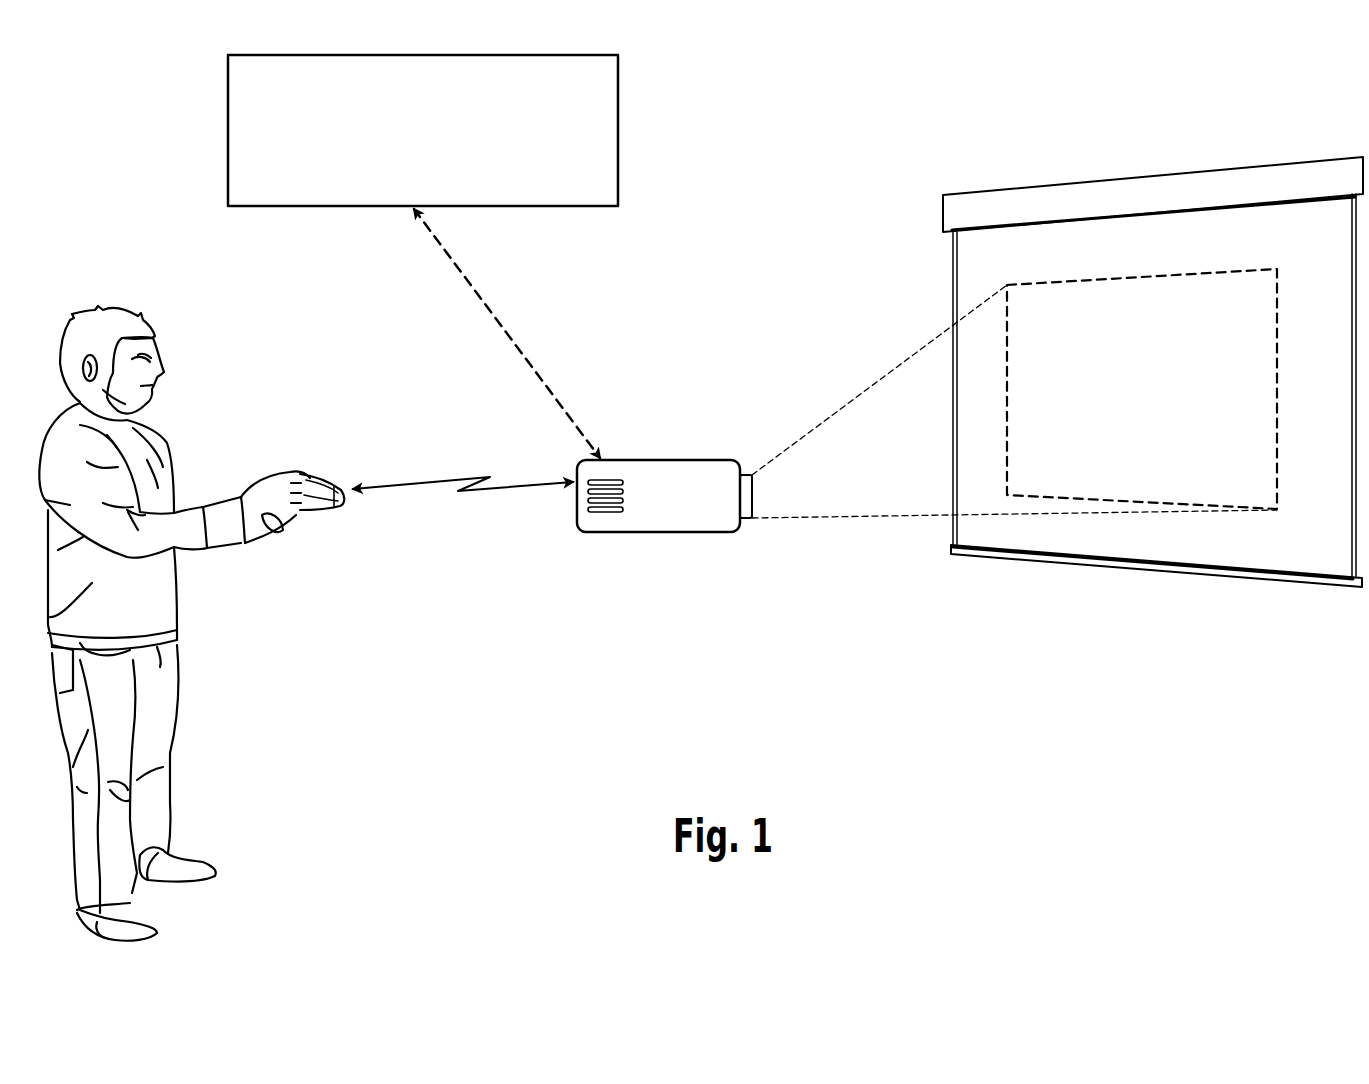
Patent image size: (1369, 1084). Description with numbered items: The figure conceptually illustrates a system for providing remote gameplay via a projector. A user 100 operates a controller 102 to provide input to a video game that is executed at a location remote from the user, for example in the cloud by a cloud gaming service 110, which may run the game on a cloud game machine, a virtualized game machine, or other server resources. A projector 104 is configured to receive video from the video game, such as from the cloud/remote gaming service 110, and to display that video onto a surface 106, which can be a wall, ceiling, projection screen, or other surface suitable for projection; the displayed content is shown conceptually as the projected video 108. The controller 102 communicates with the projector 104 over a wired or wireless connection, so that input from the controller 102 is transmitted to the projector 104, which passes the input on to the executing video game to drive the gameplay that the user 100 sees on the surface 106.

The user 100 is at (92, 300).
The controller 102 is at (340, 506).
The projector 104 is at (650, 460).
The surface 106 is at (1131, 178).
The projected video 108 is at (1206, 272).
The cloud gaming service 110 is at (618, 138).